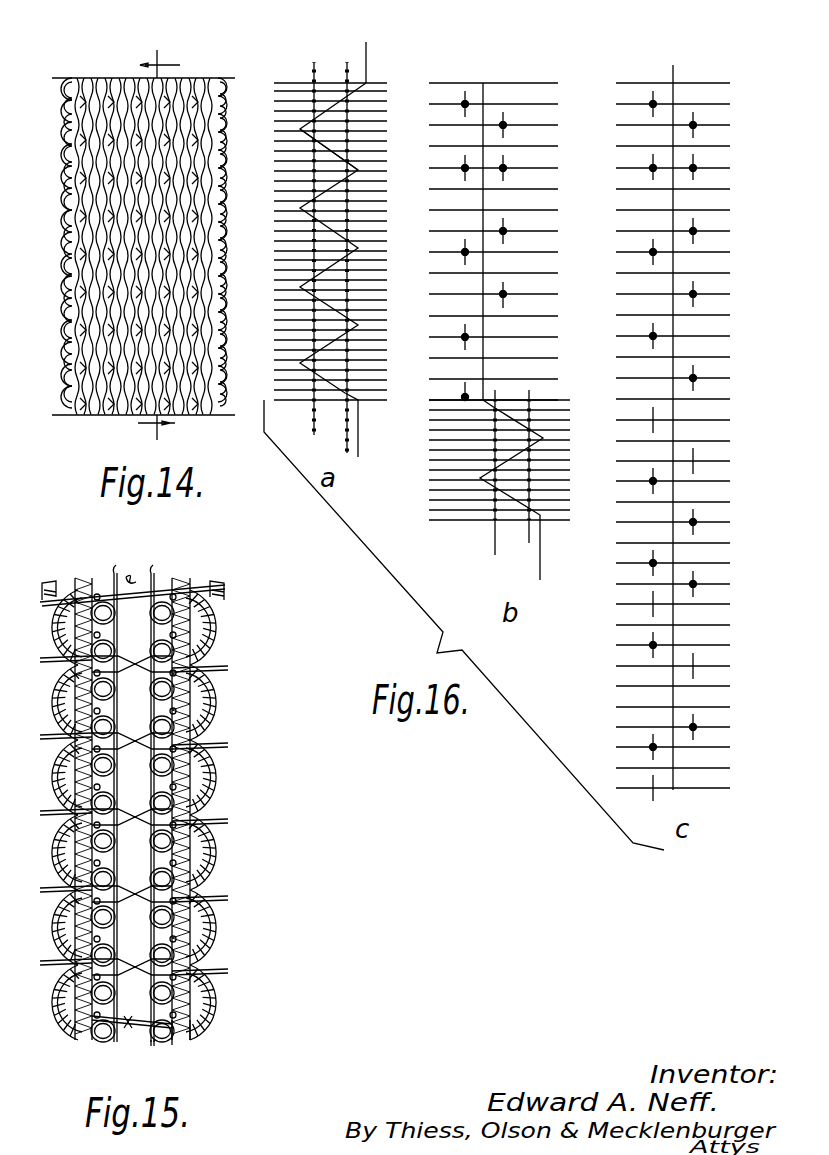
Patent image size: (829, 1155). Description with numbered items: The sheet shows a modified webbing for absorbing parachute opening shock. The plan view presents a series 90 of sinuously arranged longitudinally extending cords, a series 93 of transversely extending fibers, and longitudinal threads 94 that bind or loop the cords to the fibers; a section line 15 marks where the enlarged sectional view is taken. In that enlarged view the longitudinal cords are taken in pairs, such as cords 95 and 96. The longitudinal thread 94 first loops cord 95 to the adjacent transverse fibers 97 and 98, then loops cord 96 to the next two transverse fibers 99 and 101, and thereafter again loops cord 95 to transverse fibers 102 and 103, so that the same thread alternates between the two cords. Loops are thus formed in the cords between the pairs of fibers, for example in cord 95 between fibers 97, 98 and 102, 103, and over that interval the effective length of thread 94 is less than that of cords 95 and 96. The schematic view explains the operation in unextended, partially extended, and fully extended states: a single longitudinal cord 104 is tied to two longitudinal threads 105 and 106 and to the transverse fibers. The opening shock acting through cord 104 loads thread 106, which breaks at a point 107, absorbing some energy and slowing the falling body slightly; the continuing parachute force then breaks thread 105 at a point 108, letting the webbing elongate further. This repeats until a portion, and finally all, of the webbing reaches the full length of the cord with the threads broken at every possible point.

In FIG. 14, the section line 15 is at (159, 246).
In FIG. 14, the series of sinuously arranged longitudinally extending cords 90 is at (236, 325).
In FIG. 15, the series of transversely extending fibers 93 is at (175, 588).
In FIG. 15, the longitudinal thread 94 is at (175, 1038).
In FIG. 15, the longitudinal cord 95 is at (232, 936).
In FIG. 15, the longitudinal cord 96 is at (233, 992).
In FIG. 15, the transverse fiber 97 is at (150, 1027).
In FIG. 15, the transverse fiber 98 is at (152, 988).
In FIG. 15, the transverse fiber 99 is at (152, 944).
In FIG. 15, the transverse fiber 101 is at (152, 910).
In FIG. 15, the transverse fiber 102 is at (150, 876).
In FIG. 15, the transverse fiber 103 is at (152, 838).
In FIG. 16, the longitudinal cord 104 is at (366, 62).
In FIG. 16, the longitudinal thread 105 is at (314, 72).
In FIG. 16, the longitudinal thread 106 is at (348, 62).
In FIG. 16, the breaking point 107 is at (350, 118).
In FIG. 16, the breaking point 108 is at (300, 128).